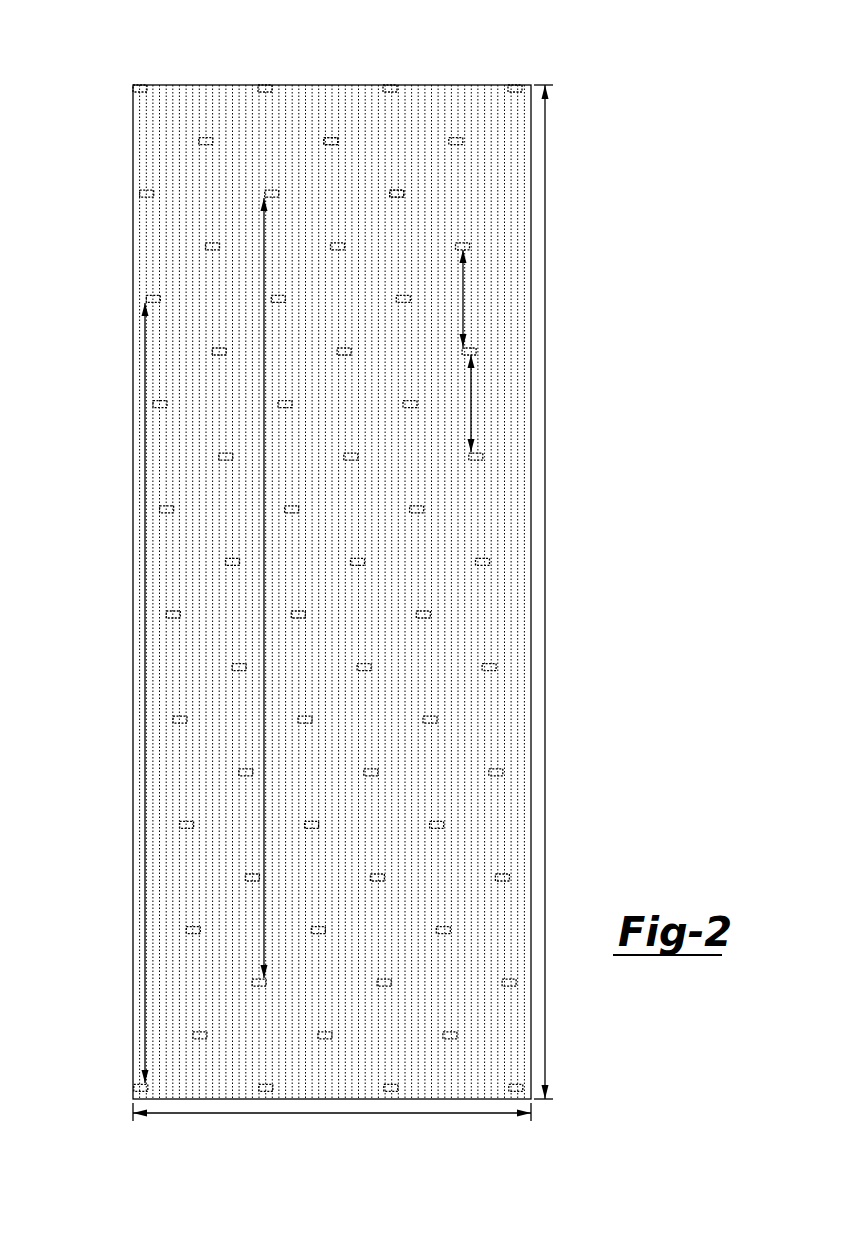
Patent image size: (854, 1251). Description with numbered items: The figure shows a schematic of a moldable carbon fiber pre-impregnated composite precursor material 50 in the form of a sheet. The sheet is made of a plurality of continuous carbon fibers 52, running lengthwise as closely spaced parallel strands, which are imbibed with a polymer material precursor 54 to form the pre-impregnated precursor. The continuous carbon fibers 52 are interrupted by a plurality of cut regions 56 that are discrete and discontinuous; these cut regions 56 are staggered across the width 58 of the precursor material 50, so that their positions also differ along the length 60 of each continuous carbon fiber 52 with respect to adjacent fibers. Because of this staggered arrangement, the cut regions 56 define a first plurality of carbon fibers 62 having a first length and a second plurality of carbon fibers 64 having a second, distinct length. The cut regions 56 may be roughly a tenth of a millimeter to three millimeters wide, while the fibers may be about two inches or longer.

The moldable carbon fiber pre-impregnated composite precursor material 50 is at (150, 46).
The continuous carbon fibers 52 is at (243, 85).
The polymer material precursor 54 is at (161, 130).
The cut regions 56 is at (393, 190).
The width 58 is at (202, 1115).
The length 60 is at (545, 600).
The first plurality of carbon fibers 62 is at (265, 375).
The second plurality of carbon fibers 64 is at (463, 307).